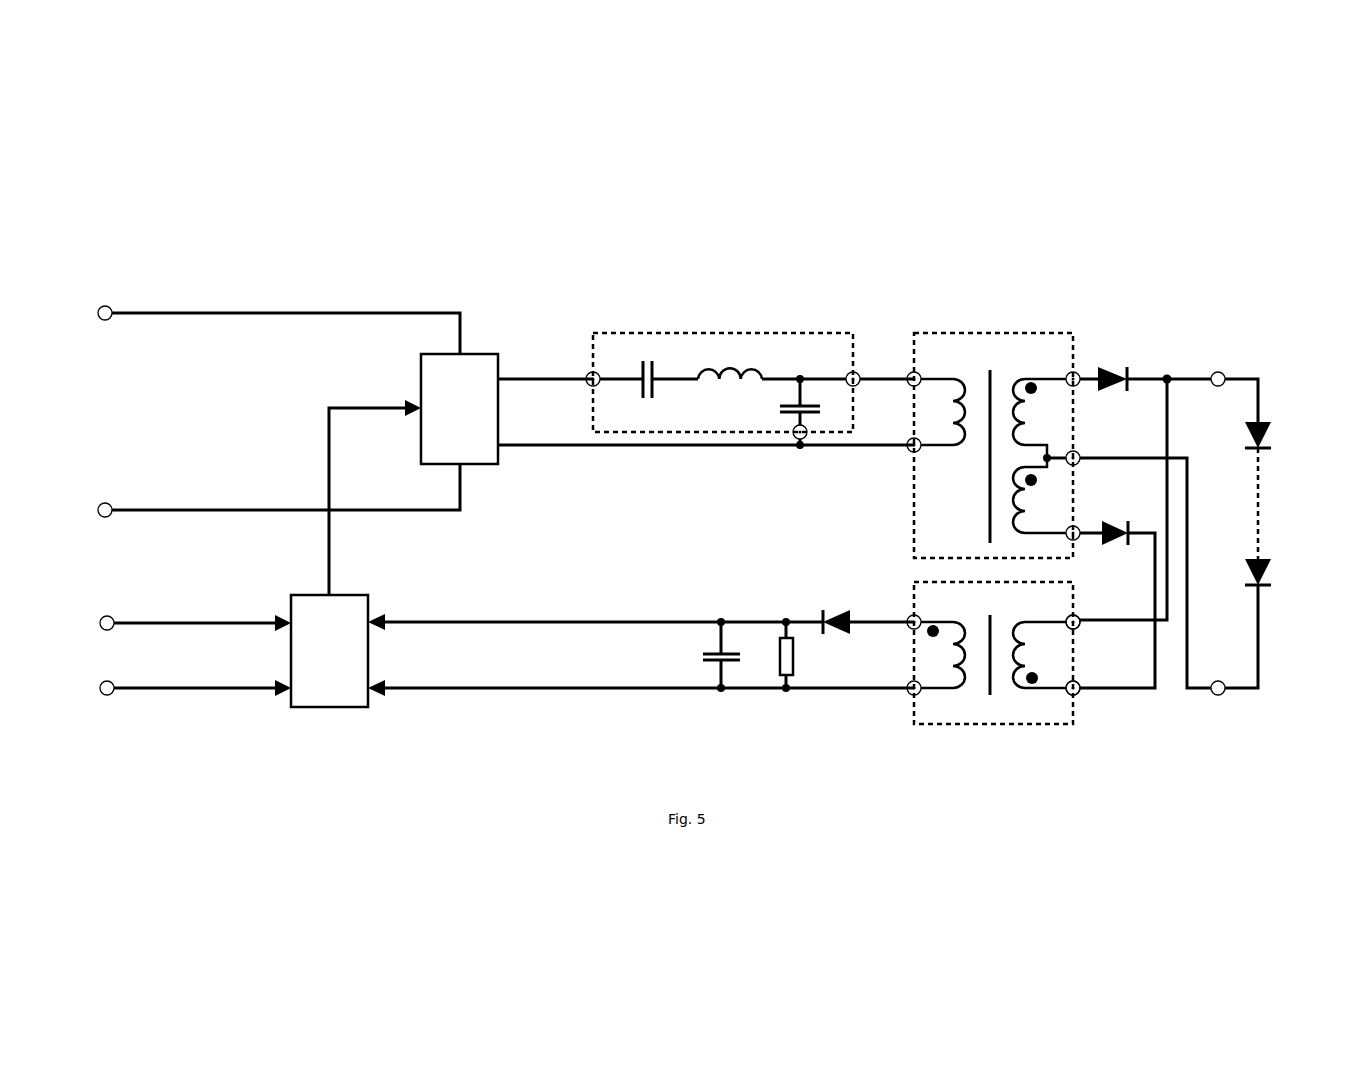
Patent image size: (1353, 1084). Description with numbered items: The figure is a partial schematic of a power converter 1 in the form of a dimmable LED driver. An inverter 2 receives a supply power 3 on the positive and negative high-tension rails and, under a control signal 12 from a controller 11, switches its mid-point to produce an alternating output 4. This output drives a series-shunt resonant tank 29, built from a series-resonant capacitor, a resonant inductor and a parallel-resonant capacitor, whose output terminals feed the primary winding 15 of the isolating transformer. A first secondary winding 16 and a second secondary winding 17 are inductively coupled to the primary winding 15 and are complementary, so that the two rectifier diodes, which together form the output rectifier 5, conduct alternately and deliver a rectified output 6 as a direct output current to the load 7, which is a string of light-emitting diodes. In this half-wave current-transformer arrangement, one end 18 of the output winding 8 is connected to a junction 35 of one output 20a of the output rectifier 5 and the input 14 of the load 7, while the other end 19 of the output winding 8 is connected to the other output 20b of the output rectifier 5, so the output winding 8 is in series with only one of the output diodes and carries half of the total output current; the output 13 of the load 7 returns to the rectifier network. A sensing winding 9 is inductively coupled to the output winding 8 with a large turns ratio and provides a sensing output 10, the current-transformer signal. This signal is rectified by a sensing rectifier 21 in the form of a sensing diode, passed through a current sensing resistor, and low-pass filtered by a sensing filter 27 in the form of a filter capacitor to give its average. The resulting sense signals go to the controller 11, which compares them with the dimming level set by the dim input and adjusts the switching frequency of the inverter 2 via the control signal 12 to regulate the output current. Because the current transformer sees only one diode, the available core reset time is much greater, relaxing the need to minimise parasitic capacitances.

The power converter 1 is at (1174, 234).
The inverter 2 is at (478, 352).
The supply power 3 is at (322, 282).
The alternating output 4 is at (1089, 339).
The output rectifier 5 is at (1139, 364).
The rectified output 6 is at (1181, 388).
The load 7 is at (1272, 412).
The output winding 8 is at (1022, 691).
The sensing winding 9 is at (928, 692).
The sensing output 10 is at (582, 583).
The controller 11 is at (328, 709).
The control signal 12 is at (327, 470).
The output of the load 13 is at (1220, 697).
The input of the load 14 is at (1222, 372).
The primary winding 15 is at (937, 377).
The first secondary winding 16 is at (1031, 377).
The second secondary winding 17 is at (1013, 535).
The one end of the output winding 18 is at (1078, 627).
The another end of the output winding 19 is at (1080, 693).
The one output of the output rectifier 20a is at (1153, 385).
The another output of the output rectifier 20b is at (1135, 530).
The sensing rectifier 21 is at (818, 577).
The sensing filter 27 is at (722, 598).
The resonant tank 29 is at (808, 332).
The junction 35 is at (1170, 377).